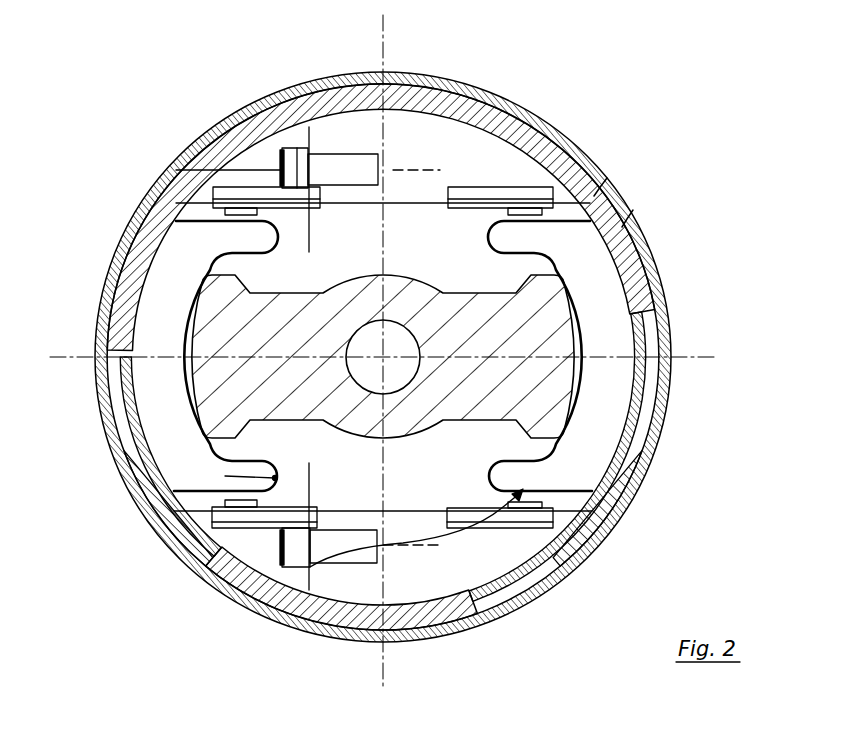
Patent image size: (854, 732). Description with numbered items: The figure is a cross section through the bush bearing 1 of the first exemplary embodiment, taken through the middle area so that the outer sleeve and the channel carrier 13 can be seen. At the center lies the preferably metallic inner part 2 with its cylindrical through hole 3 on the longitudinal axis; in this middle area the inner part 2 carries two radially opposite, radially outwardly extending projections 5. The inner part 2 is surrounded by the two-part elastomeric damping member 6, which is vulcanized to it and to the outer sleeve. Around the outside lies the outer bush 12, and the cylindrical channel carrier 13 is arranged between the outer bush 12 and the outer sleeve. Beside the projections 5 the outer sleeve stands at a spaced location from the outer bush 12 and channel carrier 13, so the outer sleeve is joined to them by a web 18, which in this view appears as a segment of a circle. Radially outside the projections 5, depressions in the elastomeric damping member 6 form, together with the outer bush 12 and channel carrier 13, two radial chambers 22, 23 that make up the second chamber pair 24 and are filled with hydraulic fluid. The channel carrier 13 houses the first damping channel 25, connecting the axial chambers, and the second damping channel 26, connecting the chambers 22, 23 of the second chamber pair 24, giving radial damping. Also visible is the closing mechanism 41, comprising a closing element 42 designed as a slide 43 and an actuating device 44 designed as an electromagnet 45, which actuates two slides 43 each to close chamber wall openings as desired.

The bush bearing 1 is at (664, 104).
The inner part 2 is at (373, 300).
The through hole 3 is at (240, 182).
The projections 5 is at (214, 335).
The elastomeric damping member 6 is at (487, 265).
The outer bush 12 is at (600, 183).
The channel carrier 13 is at (626, 206).
The web 18 is at (500, 118).
The radial chamber 22 is at (160, 420).
The radial chamber 23 is at (593, 450).
The second chamber pair 24 is at (297, 545).
The first damping channel 25 is at (565, 550).
The second damping channel 26 is at (142, 465).
The closing mechanism 41 is at (448, 142).
The closing element 42 is at (505, 165).
The slide 43 is at (503, 202).
The actuating device 44 is at (364, 347).
The electromagnet 45 is at (180, 182).